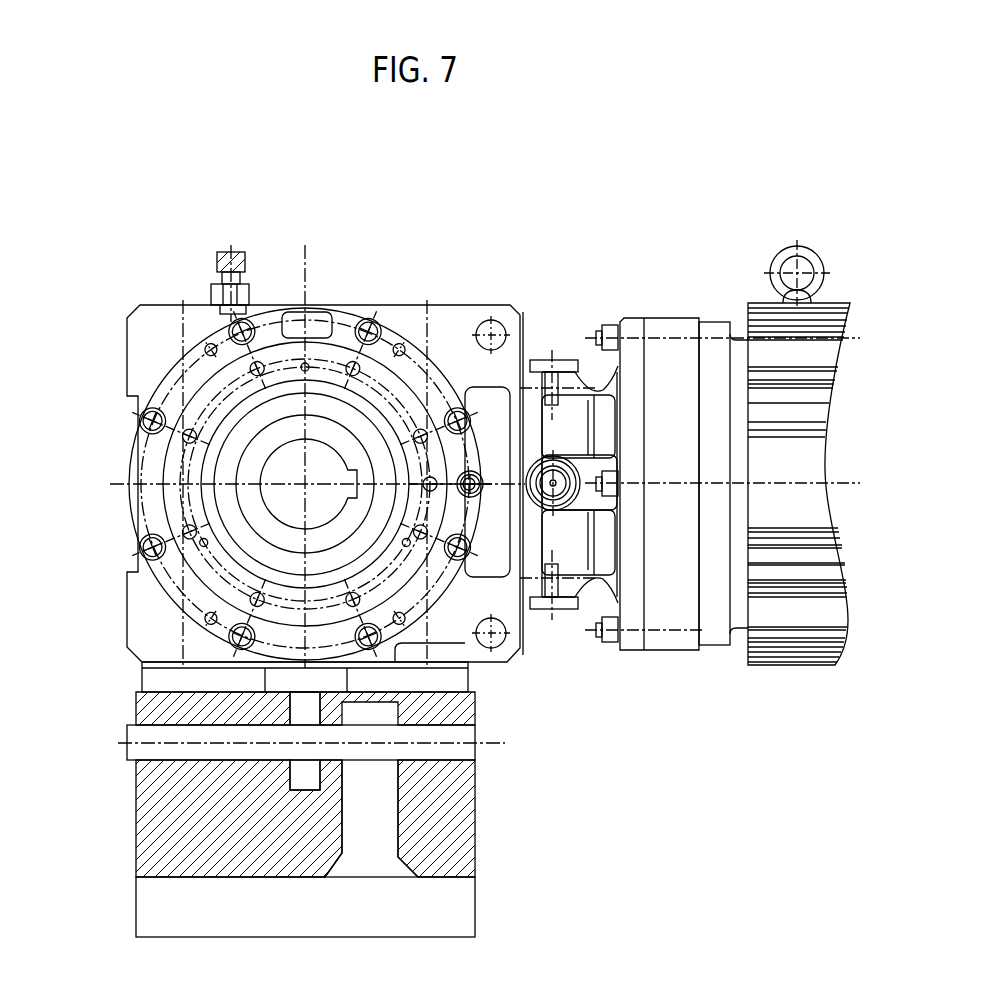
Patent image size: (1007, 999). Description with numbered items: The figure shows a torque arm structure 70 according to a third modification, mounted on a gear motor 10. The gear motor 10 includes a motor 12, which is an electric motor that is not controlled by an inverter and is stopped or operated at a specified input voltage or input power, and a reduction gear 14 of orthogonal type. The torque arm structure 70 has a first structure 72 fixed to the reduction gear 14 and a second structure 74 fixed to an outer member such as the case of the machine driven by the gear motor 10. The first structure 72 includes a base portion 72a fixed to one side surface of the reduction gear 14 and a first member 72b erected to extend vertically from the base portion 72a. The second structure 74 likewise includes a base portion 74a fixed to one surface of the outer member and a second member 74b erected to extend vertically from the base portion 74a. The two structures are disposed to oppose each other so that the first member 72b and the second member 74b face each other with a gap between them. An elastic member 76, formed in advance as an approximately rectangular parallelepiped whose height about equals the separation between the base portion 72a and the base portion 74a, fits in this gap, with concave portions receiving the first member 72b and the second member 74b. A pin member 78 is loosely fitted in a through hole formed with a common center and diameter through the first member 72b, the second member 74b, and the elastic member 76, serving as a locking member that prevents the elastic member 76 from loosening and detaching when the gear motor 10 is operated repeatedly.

The gear motor 10 is at (655, 243).
The motor 12 is at (770, 322).
The reduction gear 14 is at (465, 327).
The torque arm structure 70 is at (670, 670).
The first structure 72 is at (63, 662).
The base portion 72a is at (157, 684).
The first member 72b is at (308, 778).
The second structure 74 is at (569, 813).
The base portion 74a is at (450, 907).
The second member 74b is at (370, 841).
The elastic member 76 is at (440, 790).
The pin member 78 is at (445, 741).